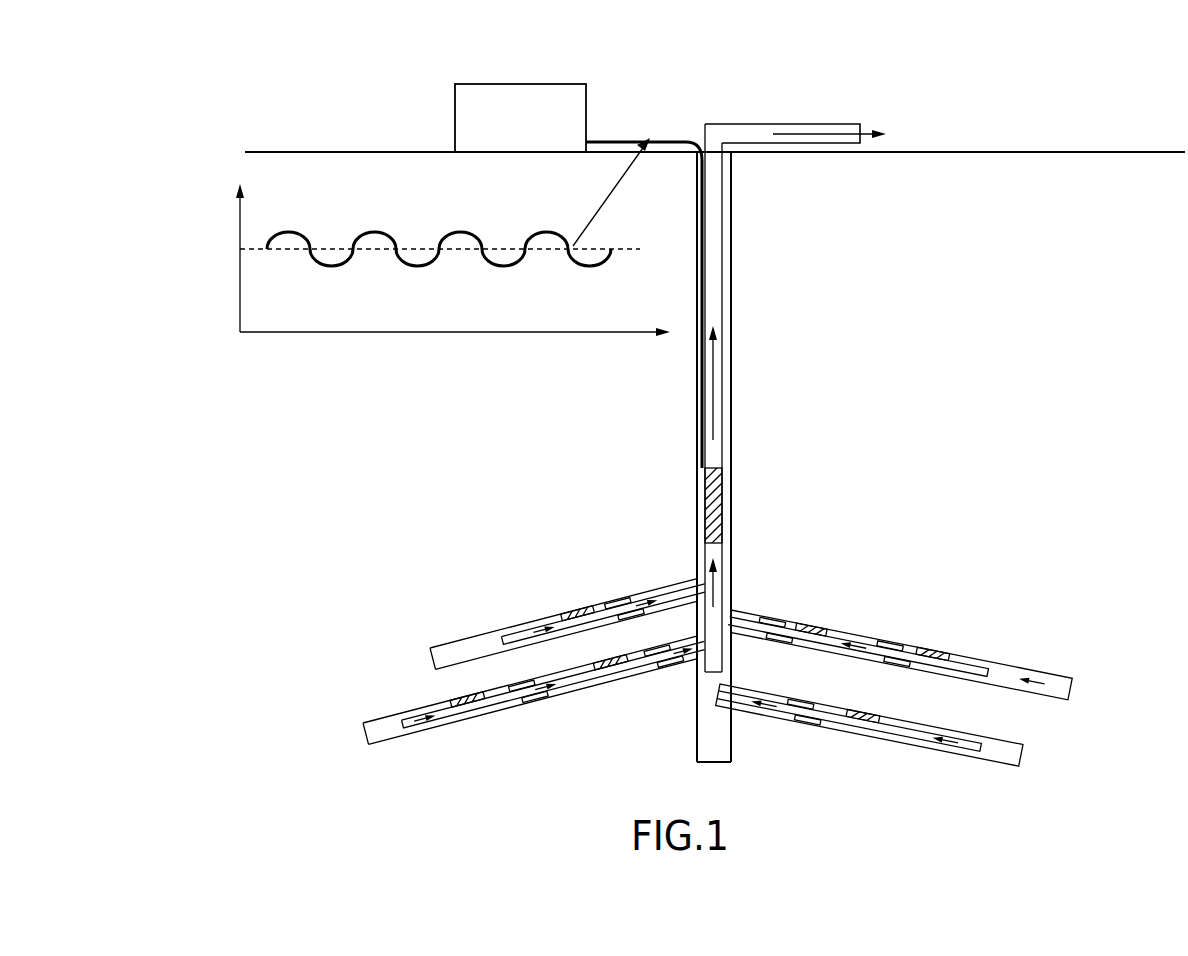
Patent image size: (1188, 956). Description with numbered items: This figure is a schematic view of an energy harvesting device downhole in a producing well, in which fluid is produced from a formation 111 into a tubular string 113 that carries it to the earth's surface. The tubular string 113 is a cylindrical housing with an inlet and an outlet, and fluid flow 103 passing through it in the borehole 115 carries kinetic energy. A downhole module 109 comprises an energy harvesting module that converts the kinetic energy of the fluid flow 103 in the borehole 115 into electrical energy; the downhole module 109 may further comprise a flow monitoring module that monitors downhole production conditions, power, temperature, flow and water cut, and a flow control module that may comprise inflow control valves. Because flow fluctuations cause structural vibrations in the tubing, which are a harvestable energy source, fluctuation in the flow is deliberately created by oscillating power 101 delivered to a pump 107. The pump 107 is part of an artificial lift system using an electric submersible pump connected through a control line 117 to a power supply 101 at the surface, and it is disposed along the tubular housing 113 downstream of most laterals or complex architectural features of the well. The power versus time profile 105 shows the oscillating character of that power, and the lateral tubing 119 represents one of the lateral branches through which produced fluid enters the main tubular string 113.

The power supply 101 is at (489, 84).
The fluid flow 103 is at (993, 115).
The power versus time profile 105 is at (240, 297).
The pump 107 is at (703, 508).
The downhole module 109 is at (467, 702).
The formation 111 is at (867, 740).
The tubular string 113 is at (723, 372).
The borehole 115 is at (721, 123).
The control line 117 is at (705, 230).
The lateral tubing 119 is at (534, 700).